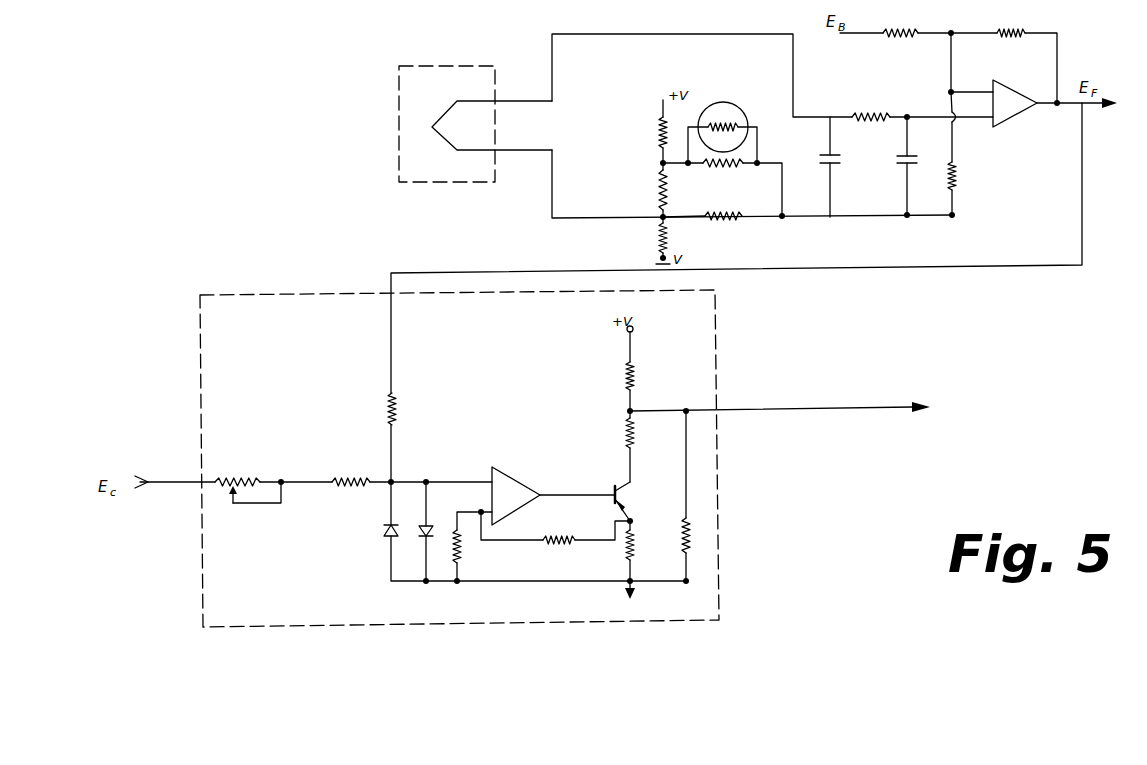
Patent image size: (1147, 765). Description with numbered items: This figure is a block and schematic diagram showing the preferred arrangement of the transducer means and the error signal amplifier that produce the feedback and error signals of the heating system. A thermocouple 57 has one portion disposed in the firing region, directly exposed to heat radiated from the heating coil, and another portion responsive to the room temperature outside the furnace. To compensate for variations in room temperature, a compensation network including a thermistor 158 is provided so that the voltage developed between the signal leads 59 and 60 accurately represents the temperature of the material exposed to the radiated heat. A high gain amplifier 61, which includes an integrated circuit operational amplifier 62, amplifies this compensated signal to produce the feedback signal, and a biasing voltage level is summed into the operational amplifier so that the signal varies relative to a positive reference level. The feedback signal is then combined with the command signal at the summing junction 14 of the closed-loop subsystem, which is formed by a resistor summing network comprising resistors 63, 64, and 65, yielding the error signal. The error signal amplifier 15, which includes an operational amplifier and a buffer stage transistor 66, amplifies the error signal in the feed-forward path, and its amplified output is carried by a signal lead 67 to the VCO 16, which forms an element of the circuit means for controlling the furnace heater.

The thermocouple 57 is at (442, 66).
The thermistor 158 is at (754, 101).
The signal lead 59 is at (801, 120).
The signal lead 60 is at (816, 213).
The high gain amplifier 61 is at (1019, 119).
The integrated circuit operational amplifier 62 is at (1004, 82).
The summing junction 14 is at (326, 432).
The error signal amplifier 15 is at (392, 612).
The resistor 63 is at (262, 461).
The resistor 64 is at (364, 461).
The resistor 65 is at (383, 408).
The buffer stage transistor 66 is at (634, 494).
The signal lead 67 is at (864, 408).
The VCO 16 is at (967, 412).